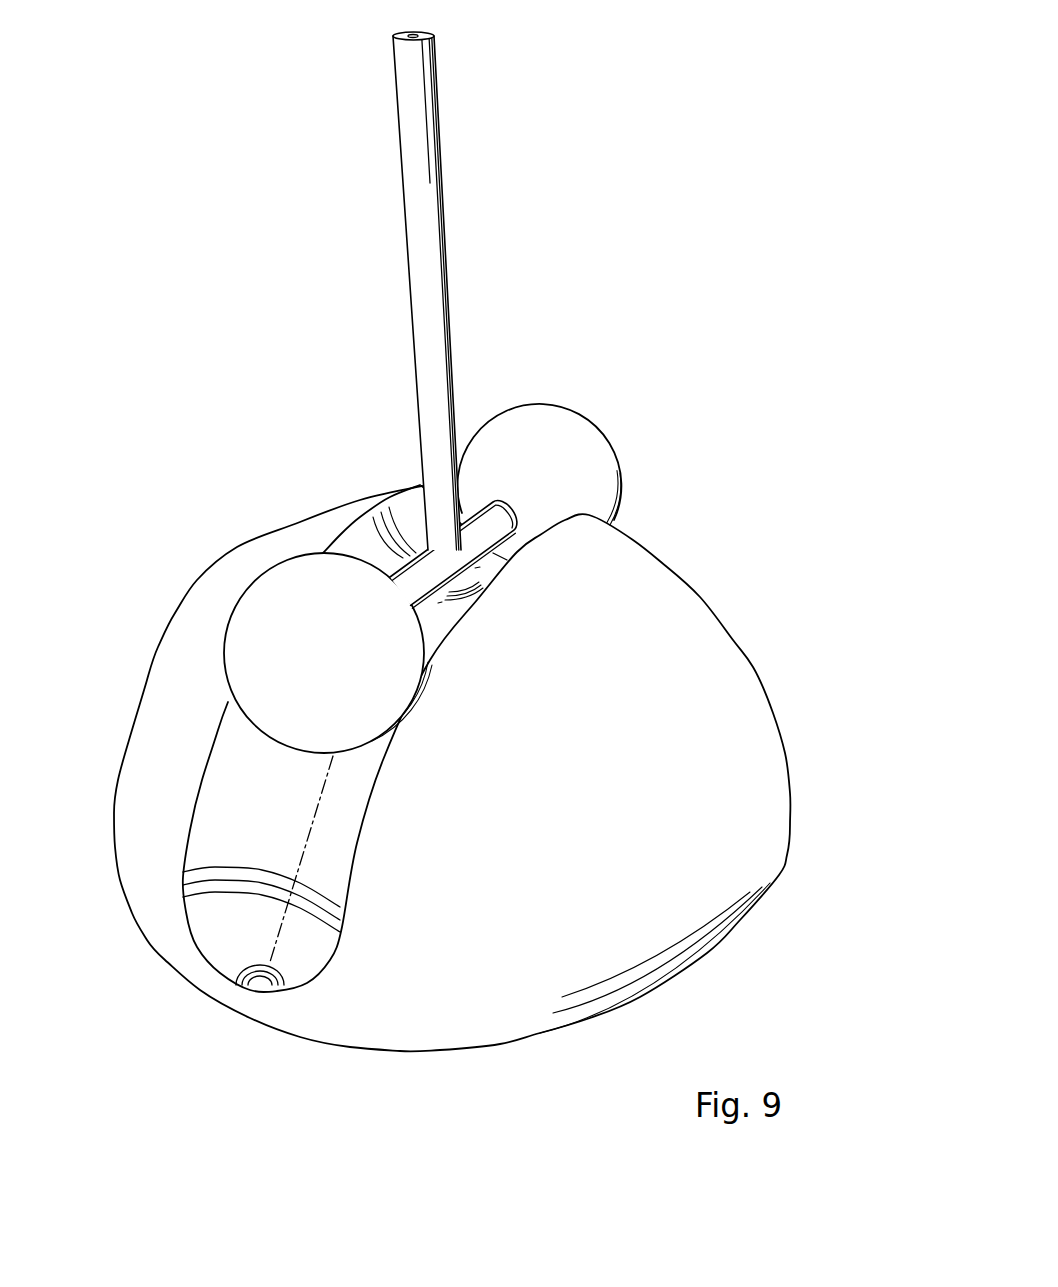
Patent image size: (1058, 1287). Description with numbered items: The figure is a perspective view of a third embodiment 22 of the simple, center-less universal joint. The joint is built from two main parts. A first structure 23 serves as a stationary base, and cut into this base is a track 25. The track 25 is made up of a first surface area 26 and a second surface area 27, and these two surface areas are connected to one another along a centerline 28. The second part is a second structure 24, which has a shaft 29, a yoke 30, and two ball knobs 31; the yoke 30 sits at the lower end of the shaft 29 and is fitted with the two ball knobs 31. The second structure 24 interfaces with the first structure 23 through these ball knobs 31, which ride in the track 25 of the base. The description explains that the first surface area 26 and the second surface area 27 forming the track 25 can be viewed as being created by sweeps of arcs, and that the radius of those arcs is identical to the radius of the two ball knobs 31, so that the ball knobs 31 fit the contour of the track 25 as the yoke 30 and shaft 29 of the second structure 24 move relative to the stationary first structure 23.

The third embodiment 22 is at (90, 124).
The first structure 23 is at (729, 527).
The second structure 24 is at (522, 320).
The track 25 is at (224, 950).
The first surface area 26 is at (267, 810).
The second surface area 27 is at (357, 836).
The centerline 28 is at (290, 905).
The shaft 29 is at (436, 220).
The yoke 30 is at (445, 583).
The ball knobs 31 is at (557, 481).